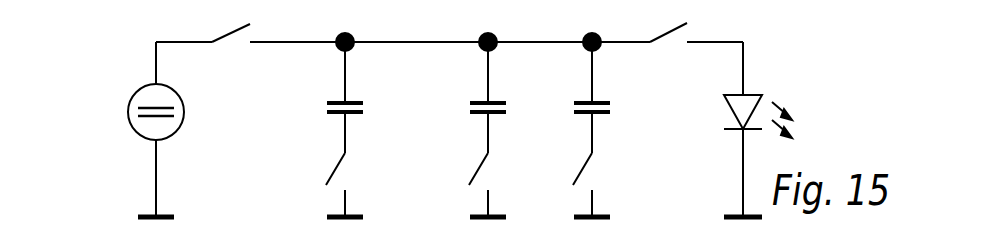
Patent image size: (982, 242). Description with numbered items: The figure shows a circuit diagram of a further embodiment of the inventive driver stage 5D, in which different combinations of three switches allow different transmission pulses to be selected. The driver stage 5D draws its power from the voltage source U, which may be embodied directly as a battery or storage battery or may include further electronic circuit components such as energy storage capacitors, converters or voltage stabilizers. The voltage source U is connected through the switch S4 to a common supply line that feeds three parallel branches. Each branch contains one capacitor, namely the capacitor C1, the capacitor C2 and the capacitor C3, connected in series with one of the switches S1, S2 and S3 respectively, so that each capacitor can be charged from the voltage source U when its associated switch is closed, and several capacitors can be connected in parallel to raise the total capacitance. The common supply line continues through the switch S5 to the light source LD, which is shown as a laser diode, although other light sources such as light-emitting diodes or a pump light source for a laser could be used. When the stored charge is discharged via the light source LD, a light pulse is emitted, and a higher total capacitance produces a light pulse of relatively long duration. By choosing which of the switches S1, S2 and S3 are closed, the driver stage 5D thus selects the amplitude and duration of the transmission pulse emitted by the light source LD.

The driver stage 5D is at (124, 22).
The voltage source U is at (168, 129).
The switch S4 is at (209, 27).
The switch S5 is at (650, 27).
The switch S1 is at (327, 182).
The switch S2 is at (471, 182).
The switch S3 is at (575, 182).
The capacitor C1 is at (362, 98).
The capacitor C2 is at (504, 98).
The capacitor C3 is at (609, 98).
The light source LD is at (731, 129).